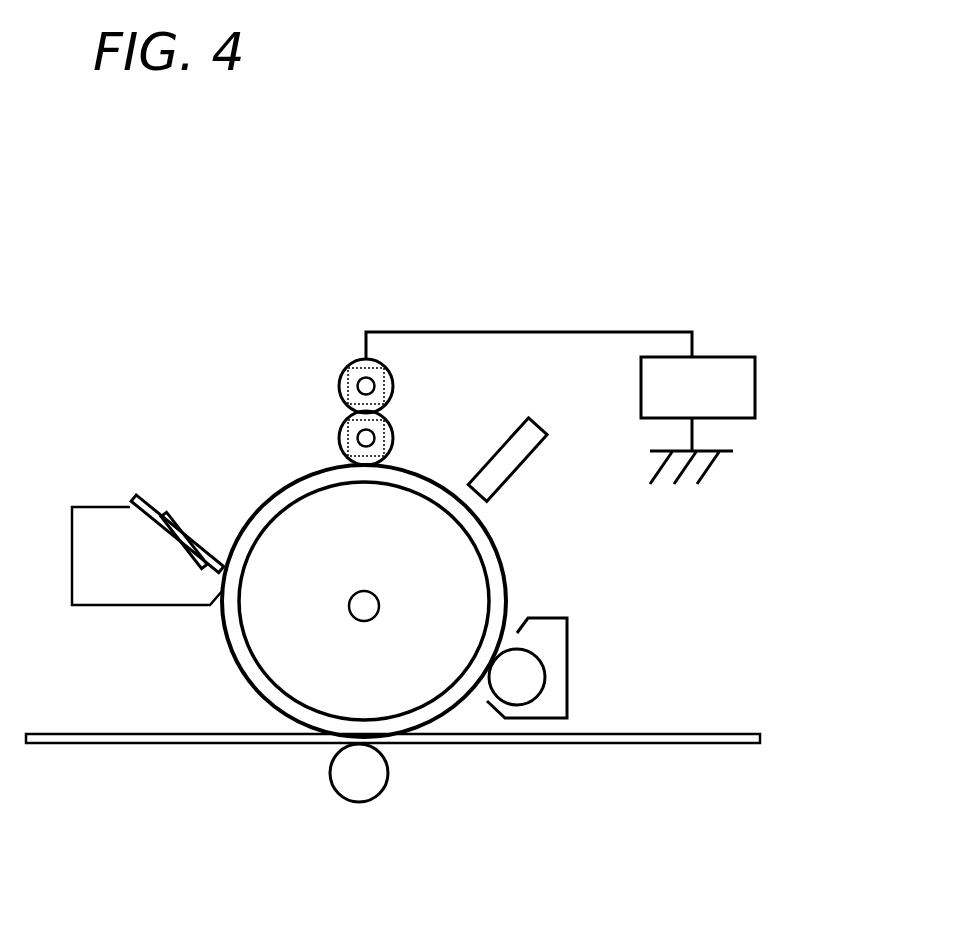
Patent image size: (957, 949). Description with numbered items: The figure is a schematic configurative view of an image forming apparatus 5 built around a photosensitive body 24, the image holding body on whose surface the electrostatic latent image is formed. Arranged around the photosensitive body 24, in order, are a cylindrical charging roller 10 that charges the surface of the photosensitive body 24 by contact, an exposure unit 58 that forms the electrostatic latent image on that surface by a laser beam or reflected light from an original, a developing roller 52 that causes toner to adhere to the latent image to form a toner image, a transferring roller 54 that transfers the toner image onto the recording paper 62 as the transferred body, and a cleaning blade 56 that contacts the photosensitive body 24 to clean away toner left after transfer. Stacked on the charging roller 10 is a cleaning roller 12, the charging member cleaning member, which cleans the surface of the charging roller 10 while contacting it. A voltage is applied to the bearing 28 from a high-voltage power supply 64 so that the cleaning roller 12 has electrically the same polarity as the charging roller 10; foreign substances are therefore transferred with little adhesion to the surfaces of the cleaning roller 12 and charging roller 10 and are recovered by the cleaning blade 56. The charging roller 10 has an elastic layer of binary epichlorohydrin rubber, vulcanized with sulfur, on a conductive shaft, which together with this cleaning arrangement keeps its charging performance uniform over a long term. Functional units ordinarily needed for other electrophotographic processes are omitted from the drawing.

The image forming apparatus 5 is at (408, 256).
The charging roller 10 is at (359, 404).
The cleaning roller 12 is at (393, 387).
The bearing 28 is at (393, 436).
The photosensitive body 24 is at (236, 672).
The developing roller 52 is at (544, 672).
The transferring roller 54 is at (347, 800).
The cleaning blade 56 is at (187, 527).
The exposure unit 58 is at (538, 423).
The recording paper 62 is at (585, 745).
The high-voltage power supply 64 is at (755, 388).